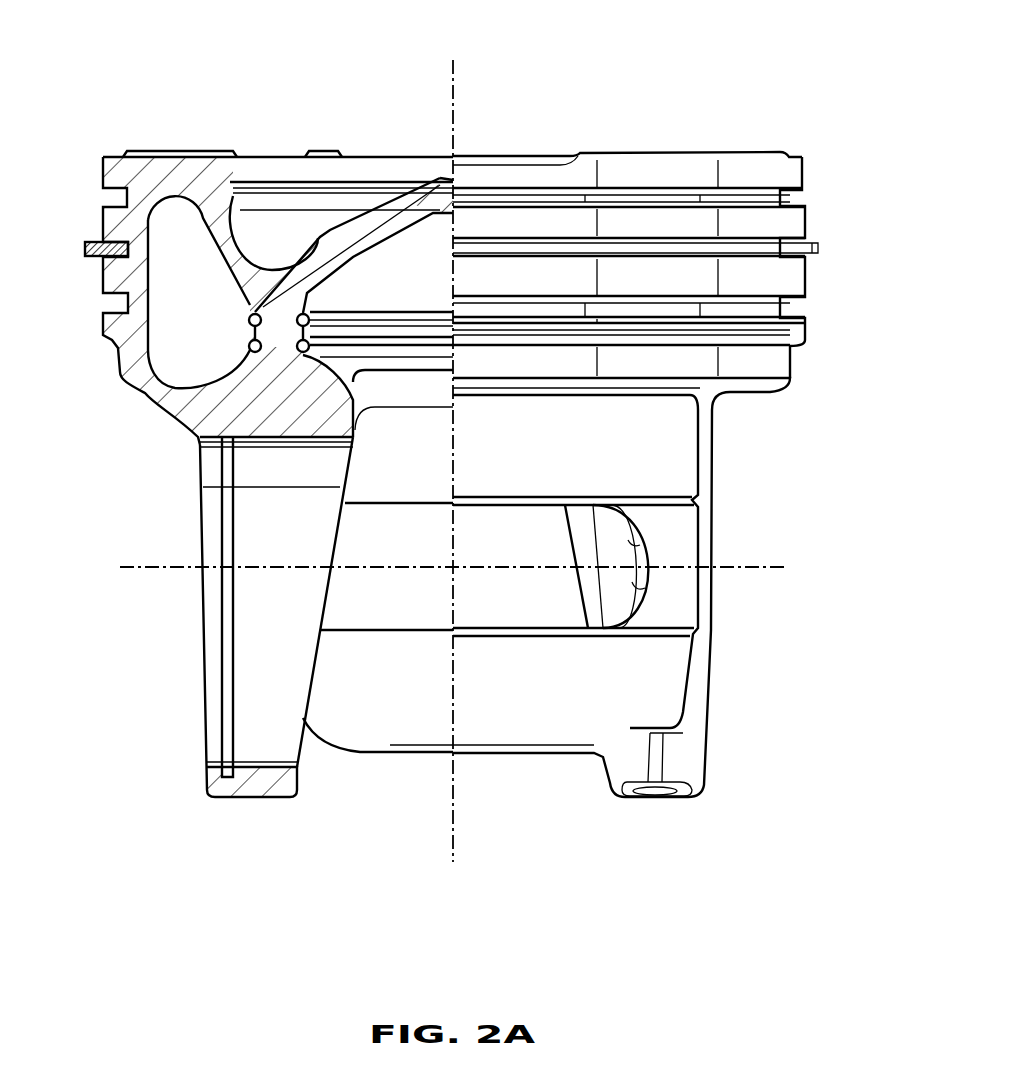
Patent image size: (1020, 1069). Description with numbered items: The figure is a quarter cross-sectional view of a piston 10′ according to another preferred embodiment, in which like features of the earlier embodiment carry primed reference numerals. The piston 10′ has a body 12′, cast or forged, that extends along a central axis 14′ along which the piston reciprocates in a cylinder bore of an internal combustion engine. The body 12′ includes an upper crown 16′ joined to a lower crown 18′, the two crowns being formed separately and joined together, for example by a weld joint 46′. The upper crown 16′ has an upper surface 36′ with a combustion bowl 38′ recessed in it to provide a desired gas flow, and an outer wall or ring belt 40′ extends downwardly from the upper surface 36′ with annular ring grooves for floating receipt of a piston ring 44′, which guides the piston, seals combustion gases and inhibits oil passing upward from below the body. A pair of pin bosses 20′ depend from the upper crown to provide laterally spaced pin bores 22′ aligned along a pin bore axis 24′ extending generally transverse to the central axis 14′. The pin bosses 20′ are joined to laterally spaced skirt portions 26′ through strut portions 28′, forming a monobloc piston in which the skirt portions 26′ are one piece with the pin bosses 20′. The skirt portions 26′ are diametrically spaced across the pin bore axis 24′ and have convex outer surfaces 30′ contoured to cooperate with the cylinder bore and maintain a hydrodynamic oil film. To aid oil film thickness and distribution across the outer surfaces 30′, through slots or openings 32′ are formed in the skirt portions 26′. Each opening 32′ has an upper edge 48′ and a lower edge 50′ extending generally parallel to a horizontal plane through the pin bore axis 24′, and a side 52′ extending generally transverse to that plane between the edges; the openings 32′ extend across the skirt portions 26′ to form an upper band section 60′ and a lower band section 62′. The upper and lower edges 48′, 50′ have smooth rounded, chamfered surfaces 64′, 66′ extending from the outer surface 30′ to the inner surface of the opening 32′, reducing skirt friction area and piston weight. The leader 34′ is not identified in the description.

The piston 10′ is at (870, 163).
The body 12′ is at (812, 163).
The central axis 14′ is at (453, 850).
The upper crown 16′ is at (807, 223).
The lower crown 18′ is at (793, 363).
The pin bosses 20′ is at (262, 797).
The pin bores 22′ is at (252, 770).
The pin bore axis 24′ is at (730, 567).
The skirt portions 26′ is at (680, 457).
The strut portions 28′ is at (697, 655).
The outer surfaces 30′ is at (660, 481).
The openings 32′ is at (632, 528).
The skirt panel 34′ is at (417, 463).
The upper surface 36′ is at (162, 157).
The combustion bowl 38′ is at (363, 213).
The ring belt 40′ is at (88, 170).
The piston ring 44′ is at (820, 247).
The weld joint 46′ is at (345, 340).
The upper edge 48′ is at (527, 508).
The lower edge 50′ is at (532, 612).
The side 52′ is at (632, 580).
The upper band section 60′ is at (660, 425).
The lower band section 62′ is at (595, 722).
The upper chamfered surface 64′ is at (502, 501).
The lower chamfered surface 66′ is at (485, 618).